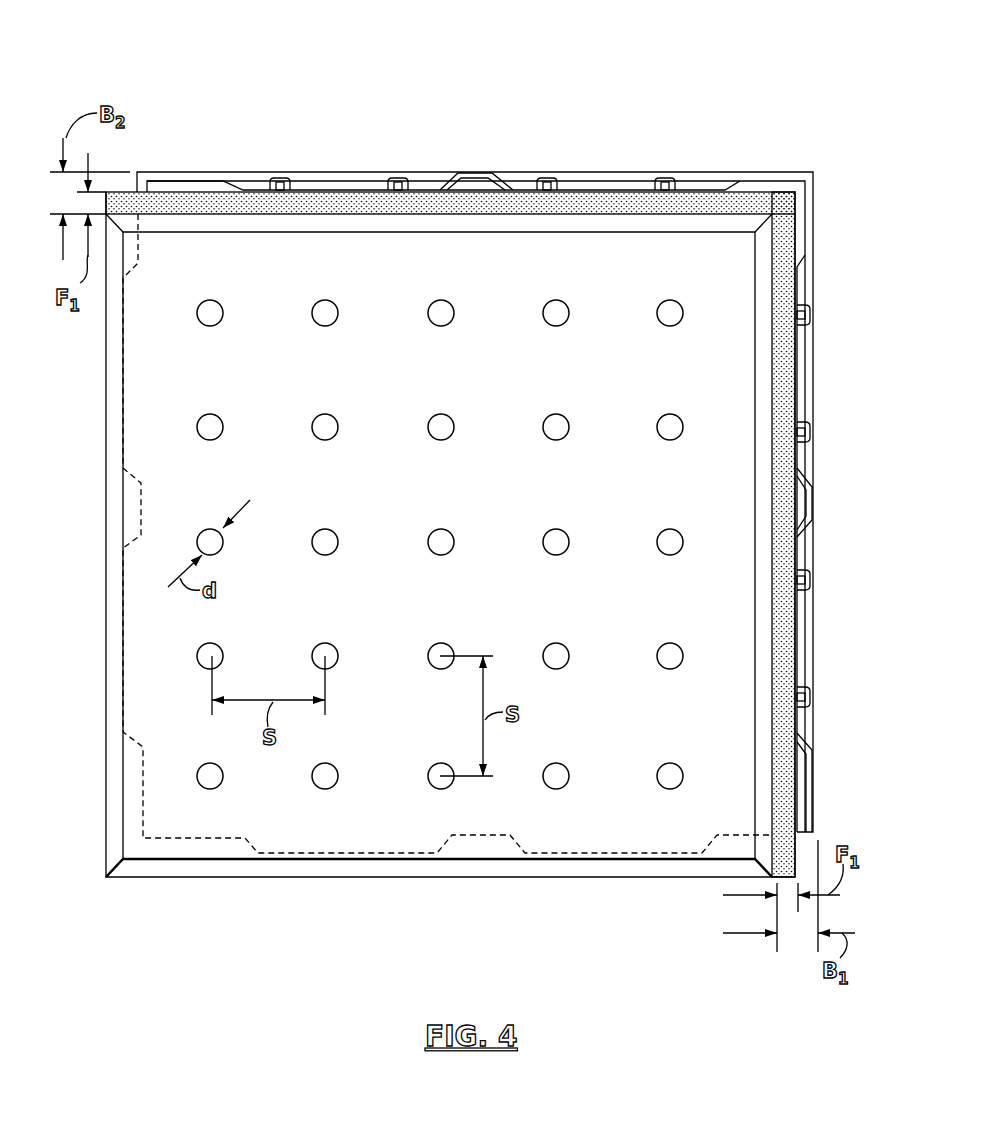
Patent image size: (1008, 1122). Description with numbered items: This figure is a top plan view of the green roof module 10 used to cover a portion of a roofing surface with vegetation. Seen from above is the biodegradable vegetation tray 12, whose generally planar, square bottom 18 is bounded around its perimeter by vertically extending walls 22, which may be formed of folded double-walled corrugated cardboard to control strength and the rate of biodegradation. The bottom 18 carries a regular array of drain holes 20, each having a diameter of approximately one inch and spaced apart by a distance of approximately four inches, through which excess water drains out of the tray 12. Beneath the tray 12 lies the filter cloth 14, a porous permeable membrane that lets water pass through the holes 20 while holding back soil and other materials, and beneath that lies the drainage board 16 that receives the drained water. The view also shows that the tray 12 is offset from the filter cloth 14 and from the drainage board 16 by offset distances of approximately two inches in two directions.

The module 10 is at (185, 105).
The biodegradable vegetation tray 12 is at (704, 366).
The filter cloth 14 is at (781, 239).
The drainage board 16 is at (745, 192).
The biodegradable bottom 18 is at (360, 262).
The drain holes 20 is at (312, 318).
The walls 22 is at (765, 638).